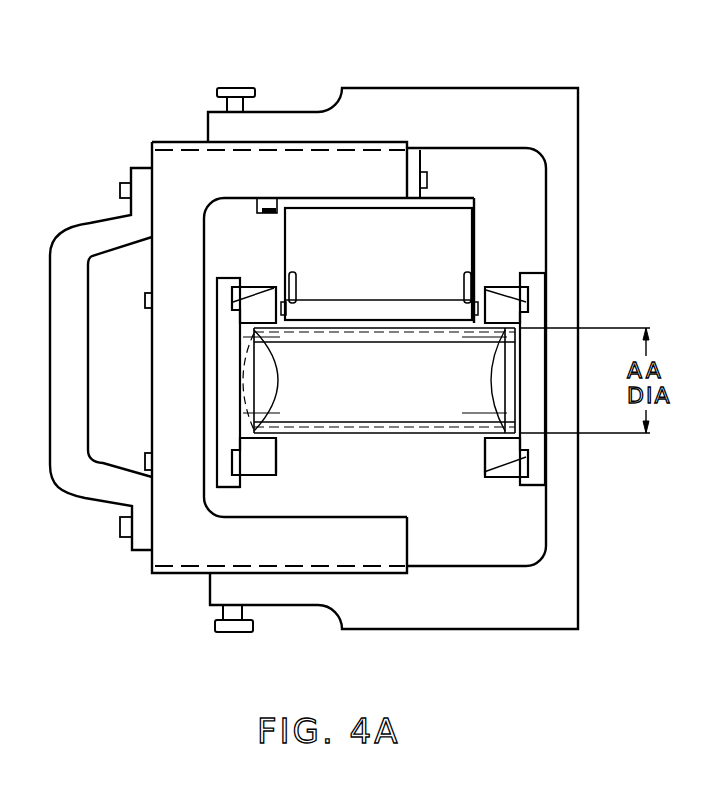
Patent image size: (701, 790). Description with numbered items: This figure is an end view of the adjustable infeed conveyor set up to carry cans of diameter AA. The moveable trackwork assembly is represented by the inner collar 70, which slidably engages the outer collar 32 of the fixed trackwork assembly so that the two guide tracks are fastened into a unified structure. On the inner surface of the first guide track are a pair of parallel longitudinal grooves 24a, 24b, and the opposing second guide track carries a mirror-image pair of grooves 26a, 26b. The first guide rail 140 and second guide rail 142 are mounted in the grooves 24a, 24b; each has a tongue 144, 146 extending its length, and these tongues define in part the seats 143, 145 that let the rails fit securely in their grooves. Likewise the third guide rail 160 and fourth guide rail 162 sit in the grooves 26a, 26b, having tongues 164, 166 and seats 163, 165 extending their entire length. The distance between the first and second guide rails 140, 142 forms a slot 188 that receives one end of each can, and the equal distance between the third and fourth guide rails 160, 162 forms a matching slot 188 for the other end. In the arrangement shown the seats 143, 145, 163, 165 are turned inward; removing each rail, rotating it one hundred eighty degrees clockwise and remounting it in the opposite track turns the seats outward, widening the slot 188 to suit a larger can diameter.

The outer collar 32 is at (557, 85).
The inner collar 70 is at (162, 385).
The first guide rail 140 is at (268, 286).
The second guide rail 142 is at (255, 477).
The seat 143 is at (240, 321).
The tongue 144 is at (218, 293).
The seat 145 is at (240, 443).
The tongue 146 is at (275, 459).
The groove 24a is at (288, 285).
The groove 24b is at (276, 462).
The groove 26a is at (485, 290).
The groove 26b is at (484, 472).
The third guide rail 160 is at (500, 287).
The fourth guide rail 162 is at (505, 480).
The seat 163 is at (522, 318).
The tongue 164 is at (528, 287).
The seat 165 is at (517, 443).
The tongue 166 is at (525, 462).
The slot 188 is at (276, 364).